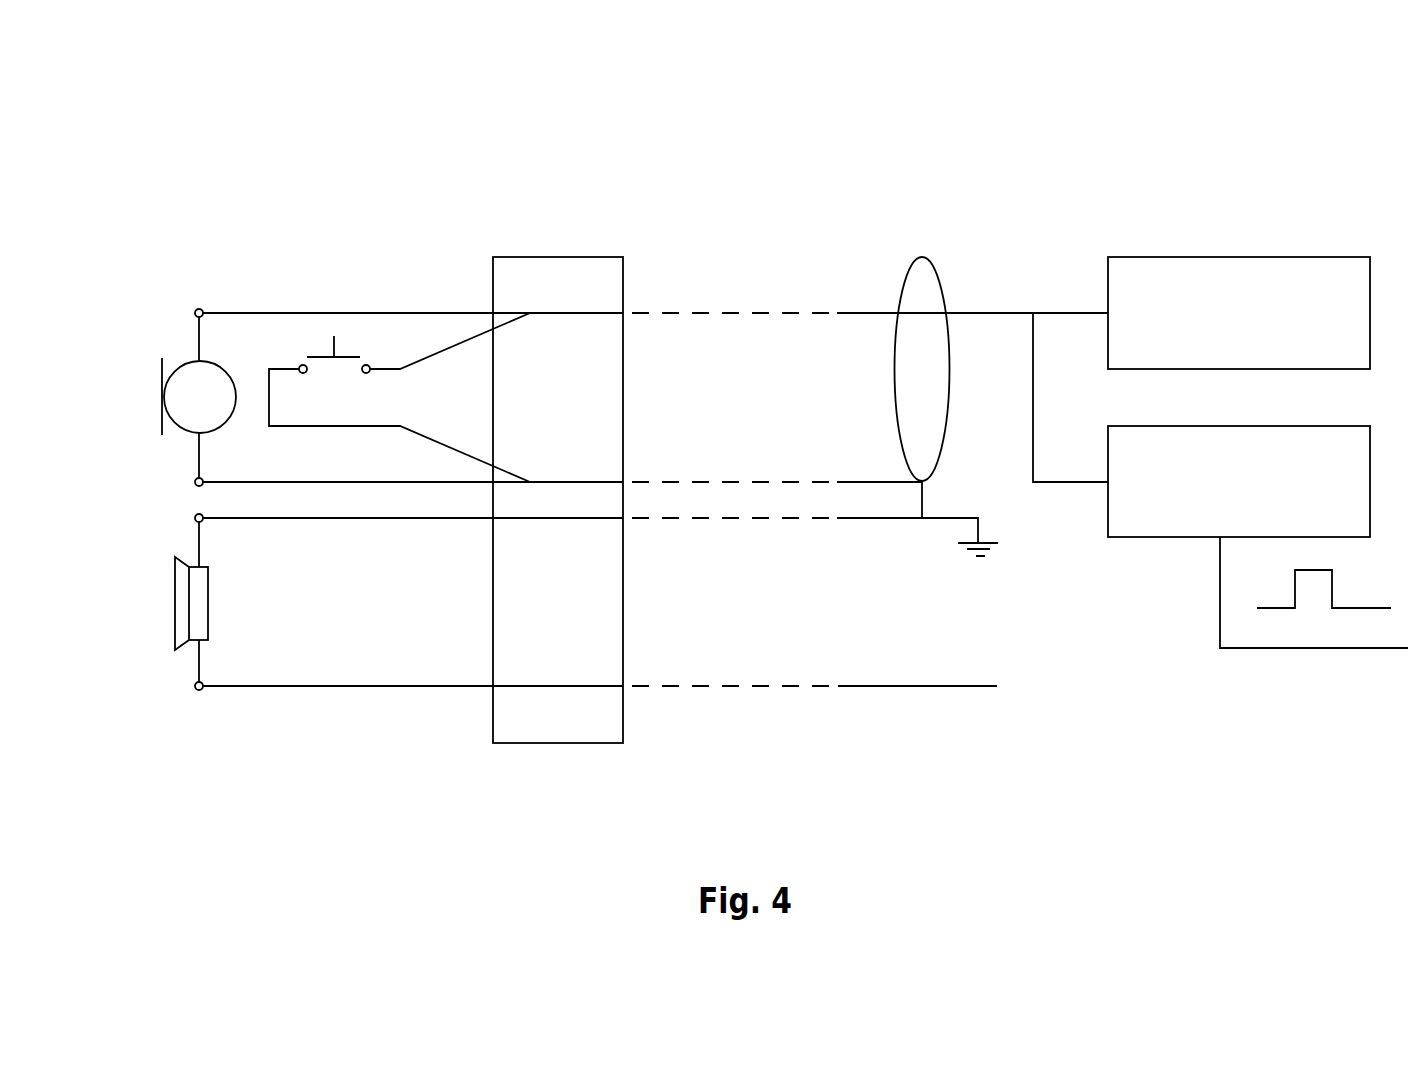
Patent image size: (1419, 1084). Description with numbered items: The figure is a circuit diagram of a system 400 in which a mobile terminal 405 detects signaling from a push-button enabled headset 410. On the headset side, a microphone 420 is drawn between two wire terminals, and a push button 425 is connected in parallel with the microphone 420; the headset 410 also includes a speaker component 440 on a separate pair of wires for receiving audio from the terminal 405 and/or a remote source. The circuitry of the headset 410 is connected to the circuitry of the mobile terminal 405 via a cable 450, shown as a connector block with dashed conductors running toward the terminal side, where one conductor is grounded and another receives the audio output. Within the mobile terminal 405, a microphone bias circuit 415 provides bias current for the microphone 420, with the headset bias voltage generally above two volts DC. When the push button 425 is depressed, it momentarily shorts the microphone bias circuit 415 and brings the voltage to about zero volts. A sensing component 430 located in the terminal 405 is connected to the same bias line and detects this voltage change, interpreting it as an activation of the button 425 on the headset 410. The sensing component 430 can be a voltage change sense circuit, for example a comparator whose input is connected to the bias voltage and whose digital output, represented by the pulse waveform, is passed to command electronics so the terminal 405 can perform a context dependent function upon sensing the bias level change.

The system 400 is at (925, 110).
The mobile terminal 405 is at (1088, 191).
The headset 410 is at (277, 190).
The microphone bias circuit 415 is at (1333, 257).
The microphone 420 is at (163, 368).
The push button 425 is at (352, 315).
The sensing component 430 is at (1333, 426).
The speaker component 440 is at (175, 570).
The cable 450 is at (682, 190).